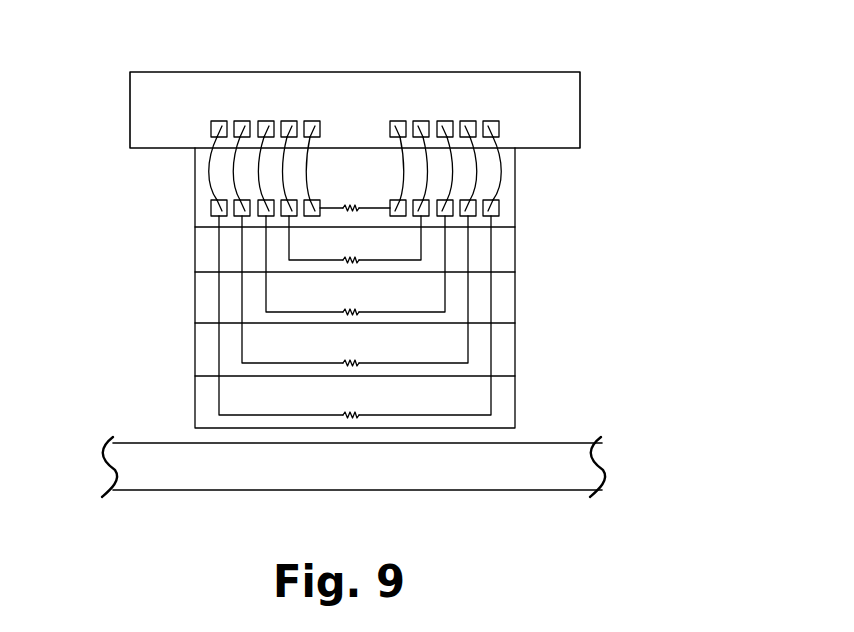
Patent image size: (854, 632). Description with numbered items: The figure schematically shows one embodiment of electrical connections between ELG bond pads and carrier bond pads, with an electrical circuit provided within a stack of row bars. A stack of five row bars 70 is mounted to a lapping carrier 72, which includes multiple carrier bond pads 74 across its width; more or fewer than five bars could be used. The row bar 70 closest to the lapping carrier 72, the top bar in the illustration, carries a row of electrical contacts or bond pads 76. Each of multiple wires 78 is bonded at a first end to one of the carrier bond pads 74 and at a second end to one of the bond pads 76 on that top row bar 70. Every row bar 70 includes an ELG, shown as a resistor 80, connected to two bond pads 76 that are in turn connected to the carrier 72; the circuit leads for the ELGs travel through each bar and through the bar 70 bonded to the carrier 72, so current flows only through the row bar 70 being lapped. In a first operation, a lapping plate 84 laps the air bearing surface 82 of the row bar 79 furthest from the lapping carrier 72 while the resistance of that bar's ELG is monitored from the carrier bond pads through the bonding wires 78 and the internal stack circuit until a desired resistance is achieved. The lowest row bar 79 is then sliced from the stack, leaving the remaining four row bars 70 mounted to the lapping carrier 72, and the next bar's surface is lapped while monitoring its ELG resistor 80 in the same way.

The row bars 70 is at (180, 283).
The lapping carrier 72 is at (562, 98).
The carrier bond pads 74 is at (410, 121).
The bond pads 76 is at (499, 206).
The wires 78 is at (499, 175).
The row bar furthest from the lapping carrier 79 is at (515, 393).
The resistor 80 is at (447, 416).
The air bearing surface 82 is at (203, 440).
The lapping plate 84 is at (560, 465).